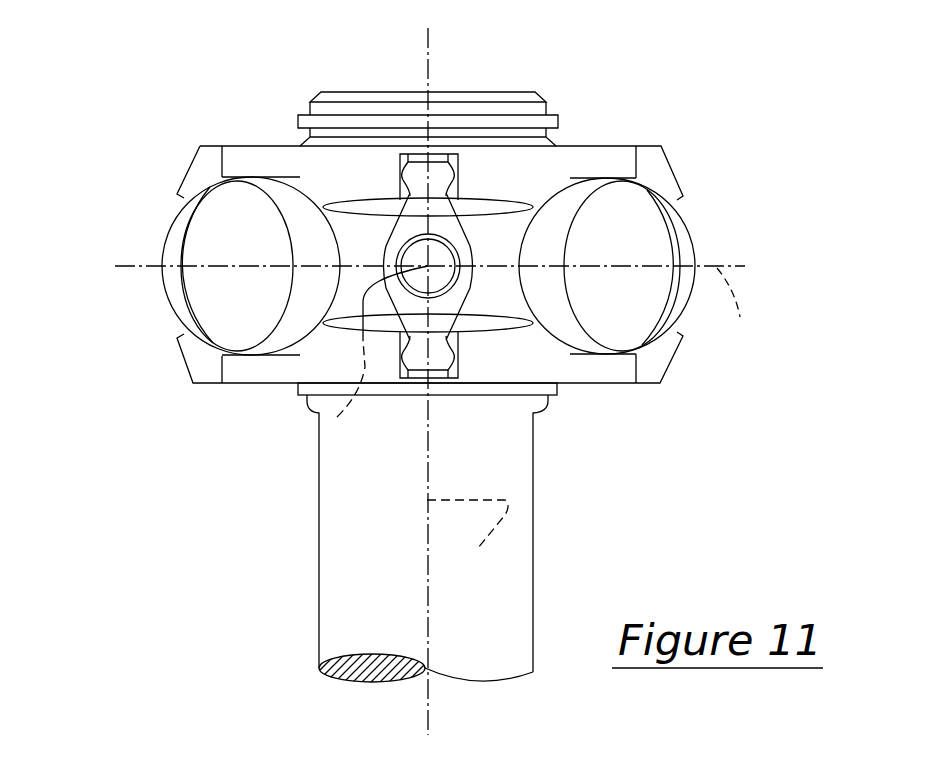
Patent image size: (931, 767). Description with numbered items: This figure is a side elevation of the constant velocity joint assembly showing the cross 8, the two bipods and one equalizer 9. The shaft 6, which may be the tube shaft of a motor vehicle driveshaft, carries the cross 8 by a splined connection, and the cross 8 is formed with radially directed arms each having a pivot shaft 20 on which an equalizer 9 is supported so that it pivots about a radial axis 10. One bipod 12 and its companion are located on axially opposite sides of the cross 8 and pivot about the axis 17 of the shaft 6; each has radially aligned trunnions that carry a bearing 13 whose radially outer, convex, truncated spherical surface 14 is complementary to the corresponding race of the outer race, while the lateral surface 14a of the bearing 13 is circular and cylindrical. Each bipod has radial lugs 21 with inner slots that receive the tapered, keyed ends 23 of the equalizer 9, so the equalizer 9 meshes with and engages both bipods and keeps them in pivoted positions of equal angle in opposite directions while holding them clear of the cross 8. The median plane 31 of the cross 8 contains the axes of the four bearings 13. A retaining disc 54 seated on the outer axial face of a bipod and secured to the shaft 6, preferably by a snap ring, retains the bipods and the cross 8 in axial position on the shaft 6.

The shaft 6 is at (338, 577).
The cross 8 is at (500, 283).
The equalizer 9 is at (511, 197).
The radial axis 10 is at (318, 430).
The bipod 12 is at (298, 145).
The bearing 13 is at (272, 146).
The spherical bearing surface 14 is at (183, 238).
The lateral surface 14a is at (563, 325).
The axis of the shaft 17 is at (478, 550).
The pivot shaft 20 is at (399, 242).
The radial lug 21 is at (201, 161).
The end of the equalizer 23 is at (438, 183).
The median plane 31 is at (742, 318).
The retaining disc 54 is at (540, 115).